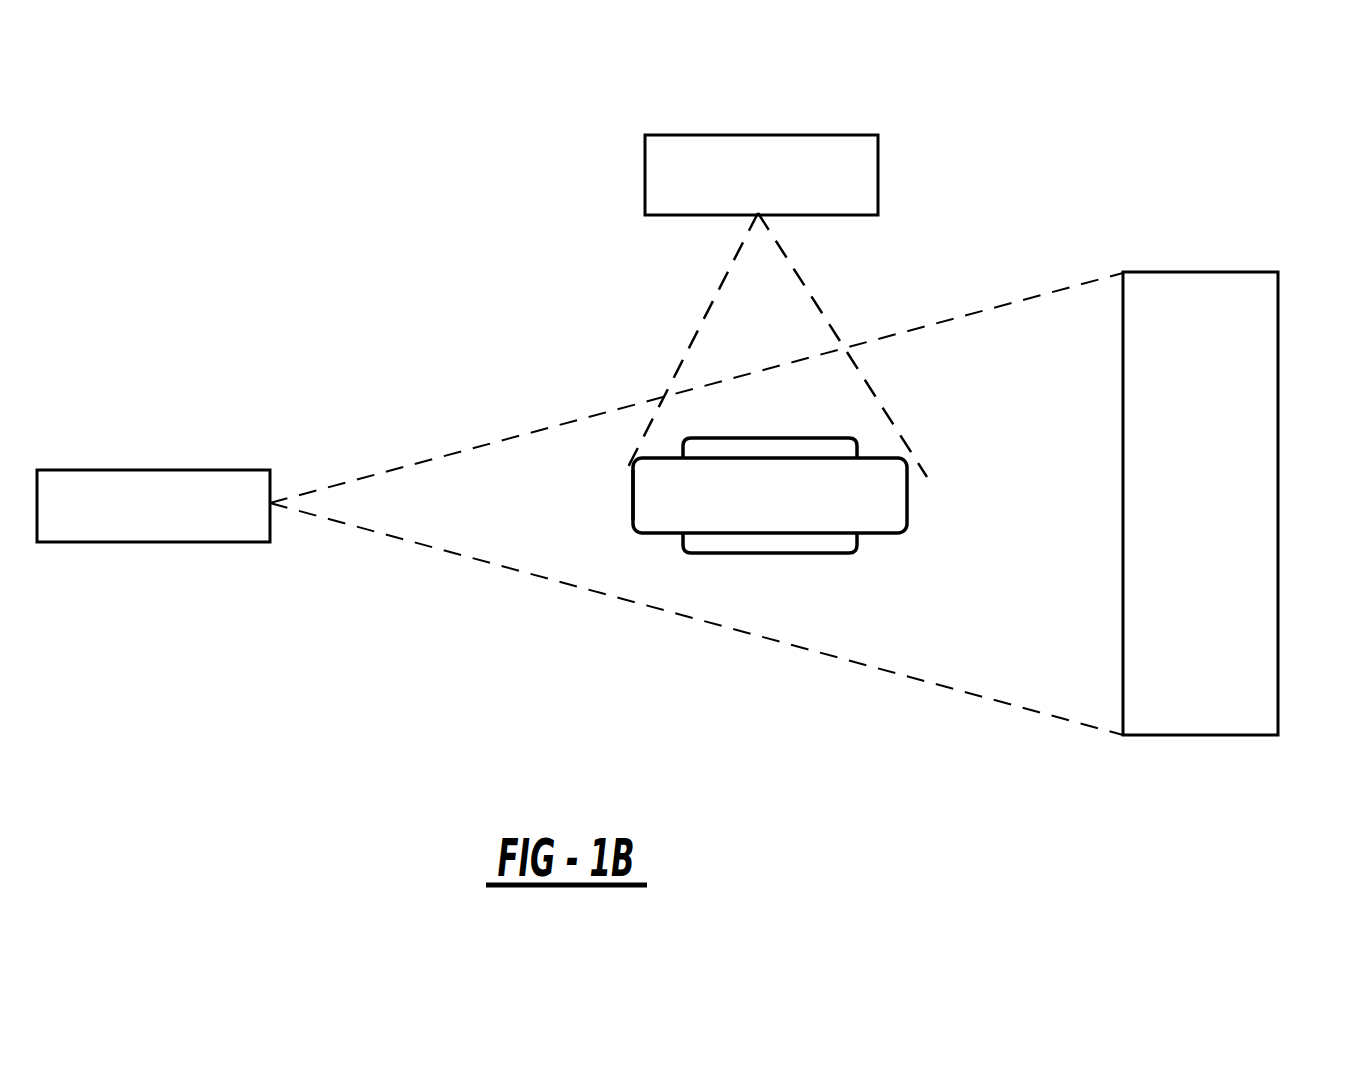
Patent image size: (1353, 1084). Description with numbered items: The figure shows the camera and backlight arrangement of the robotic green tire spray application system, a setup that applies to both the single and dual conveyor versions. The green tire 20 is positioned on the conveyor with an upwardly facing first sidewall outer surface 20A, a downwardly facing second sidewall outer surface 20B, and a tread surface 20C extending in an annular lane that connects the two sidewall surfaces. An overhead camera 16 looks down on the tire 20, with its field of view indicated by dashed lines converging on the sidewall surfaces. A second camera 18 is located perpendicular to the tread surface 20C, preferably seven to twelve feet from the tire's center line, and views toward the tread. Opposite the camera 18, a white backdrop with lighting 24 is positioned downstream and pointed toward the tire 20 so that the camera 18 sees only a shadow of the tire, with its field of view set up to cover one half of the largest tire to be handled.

The overhead camera 16 is at (820, 148).
The camera 18 is at (248, 492).
The green tire 20 is at (677, 457).
The first sidewall outer surface 20A is at (833, 438).
The second sidewall outer surface 20B is at (830, 553).
The tread surface 20C is at (633, 488).
The white backdrop with lighting 24 is at (1257, 712).